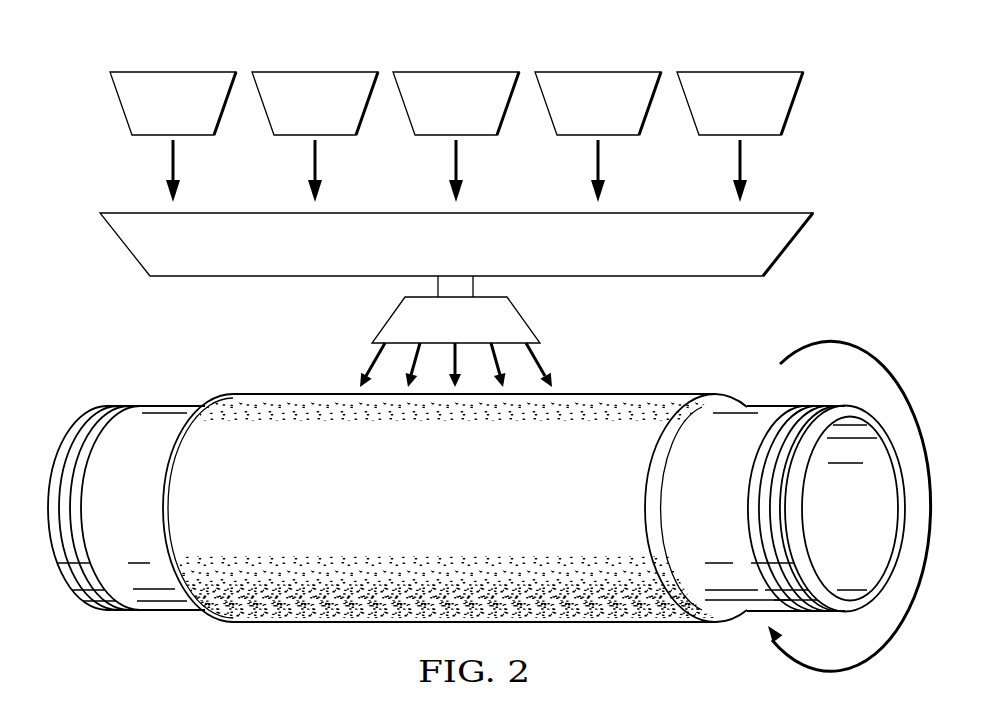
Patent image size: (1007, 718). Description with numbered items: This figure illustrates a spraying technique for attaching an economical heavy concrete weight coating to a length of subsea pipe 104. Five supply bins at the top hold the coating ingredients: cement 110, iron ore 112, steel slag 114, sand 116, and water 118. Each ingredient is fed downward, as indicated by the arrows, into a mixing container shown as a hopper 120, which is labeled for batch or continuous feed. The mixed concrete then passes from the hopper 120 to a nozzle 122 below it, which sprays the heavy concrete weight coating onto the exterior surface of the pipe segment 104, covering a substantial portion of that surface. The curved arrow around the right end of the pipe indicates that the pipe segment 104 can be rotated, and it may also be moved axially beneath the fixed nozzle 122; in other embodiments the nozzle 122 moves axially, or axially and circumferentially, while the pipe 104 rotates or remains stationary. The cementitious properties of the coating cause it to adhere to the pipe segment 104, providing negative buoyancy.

The subsea pipe 104 is at (256, 371).
The cement 110 is at (167, 70).
The iron ore 112 is at (308, 70).
The steel slag 114 is at (450, 70).
The sand 116 is at (604, 70).
The water 118 is at (743, 70).
The hopper 120 is at (790, 247).
The nozzle 122 is at (530, 315).